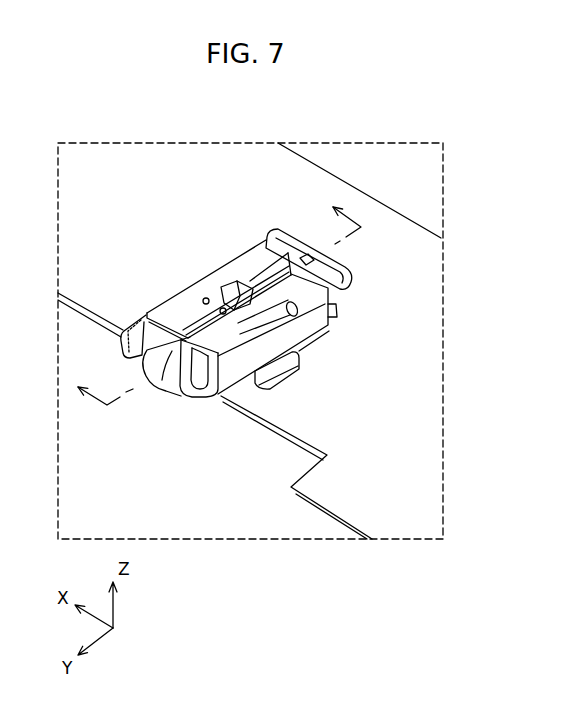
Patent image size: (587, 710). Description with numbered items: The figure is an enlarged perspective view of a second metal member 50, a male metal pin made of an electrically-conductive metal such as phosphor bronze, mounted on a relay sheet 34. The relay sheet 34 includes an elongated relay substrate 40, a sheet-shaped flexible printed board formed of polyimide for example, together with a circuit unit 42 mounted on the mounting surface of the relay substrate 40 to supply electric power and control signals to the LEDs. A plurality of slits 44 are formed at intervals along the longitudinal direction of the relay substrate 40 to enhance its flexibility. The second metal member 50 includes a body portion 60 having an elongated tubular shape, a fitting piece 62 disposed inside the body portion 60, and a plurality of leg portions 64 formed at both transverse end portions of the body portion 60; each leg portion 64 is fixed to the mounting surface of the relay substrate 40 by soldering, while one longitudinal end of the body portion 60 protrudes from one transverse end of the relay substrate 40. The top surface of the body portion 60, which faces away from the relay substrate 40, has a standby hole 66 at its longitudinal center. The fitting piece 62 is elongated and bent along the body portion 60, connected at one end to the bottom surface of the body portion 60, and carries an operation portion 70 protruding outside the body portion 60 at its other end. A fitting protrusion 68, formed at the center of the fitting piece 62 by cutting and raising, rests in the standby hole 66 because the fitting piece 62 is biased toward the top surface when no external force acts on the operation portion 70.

The relay sheet 34 is at (408, 272).
The relay substrate 40 is at (425, 312).
The circuit unit 42 is at (152, 166).
The slit 44 is at (392, 207).
The second metal member 50 is at (246, 246).
The body portion 60 is at (198, 288).
The fitting piece 62 is at (179, 356).
The leg portion 64 is at (292, 378).
The standby hole 66 is at (237, 279).
The fitting protrusion 68 is at (292, 310).
The operation portion 70 is at (334, 264).